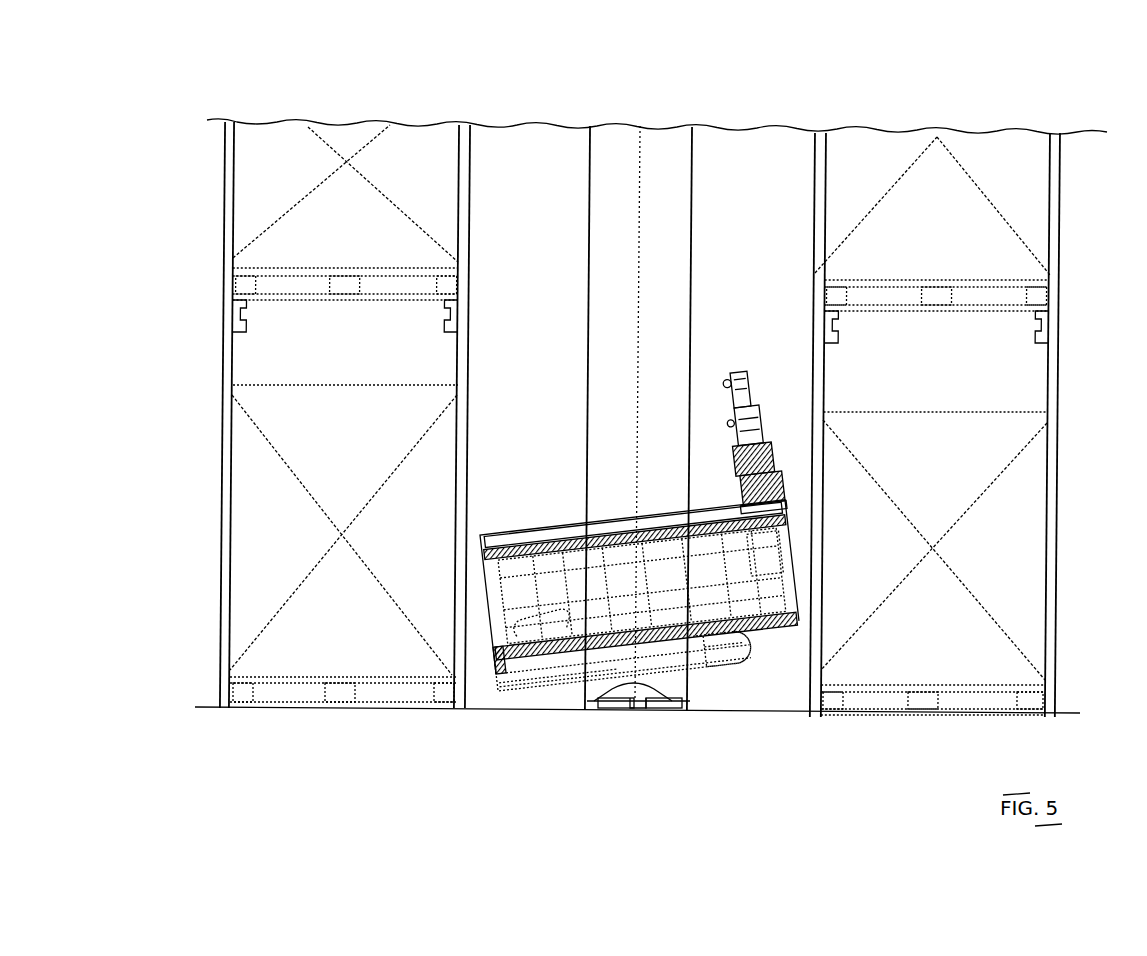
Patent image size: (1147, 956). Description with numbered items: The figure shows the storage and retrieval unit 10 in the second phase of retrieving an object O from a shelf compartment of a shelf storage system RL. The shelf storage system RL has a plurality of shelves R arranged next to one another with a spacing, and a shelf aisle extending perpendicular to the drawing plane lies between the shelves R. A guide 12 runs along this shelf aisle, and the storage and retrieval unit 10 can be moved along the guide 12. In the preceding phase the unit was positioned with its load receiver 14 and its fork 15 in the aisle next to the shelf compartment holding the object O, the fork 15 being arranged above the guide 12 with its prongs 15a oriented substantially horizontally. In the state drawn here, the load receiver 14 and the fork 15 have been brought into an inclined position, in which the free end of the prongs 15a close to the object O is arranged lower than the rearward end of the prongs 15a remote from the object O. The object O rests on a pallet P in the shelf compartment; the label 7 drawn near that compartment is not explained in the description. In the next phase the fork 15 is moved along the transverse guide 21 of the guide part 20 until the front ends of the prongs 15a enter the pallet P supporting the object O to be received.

The shelf storage system RL is at (1080, 96).
The shelf R is at (229, 191).
The storage compartment 7 is at (437, 371).
The object O is at (252, 508).
The pallet P is at (340, 697).
The storage and retrieval unit 10 is at (743, 320).
The guide part 20 is at (511, 533).
The transverse guide 21 is at (552, 589).
The fork 15 is at (537, 694).
The prongs 15a is at (576, 681).
The guide 12 is at (632, 707).
The load receiver 14 is at (705, 678).